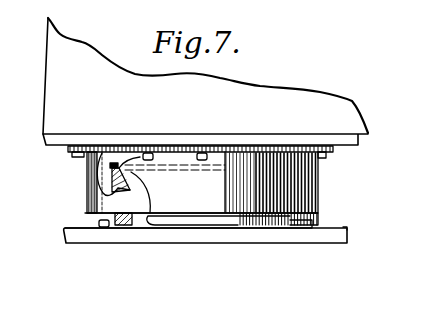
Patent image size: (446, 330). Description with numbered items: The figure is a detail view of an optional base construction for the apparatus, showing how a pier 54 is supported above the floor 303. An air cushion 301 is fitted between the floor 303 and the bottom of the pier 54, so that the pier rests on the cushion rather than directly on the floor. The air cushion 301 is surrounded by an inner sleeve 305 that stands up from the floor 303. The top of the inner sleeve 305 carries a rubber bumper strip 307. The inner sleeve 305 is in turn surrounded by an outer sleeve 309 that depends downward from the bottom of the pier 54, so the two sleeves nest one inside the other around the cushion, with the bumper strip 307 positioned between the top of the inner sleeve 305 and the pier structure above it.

The pier 54 is at (52, 137).
The air cushion 301 is at (132, 190).
The floor 303 is at (88, 238).
The inner sleeve 305 is at (100, 216).
The rubber bumper strip 307 is at (110, 165).
The outer sleeve 309 is at (88, 196).